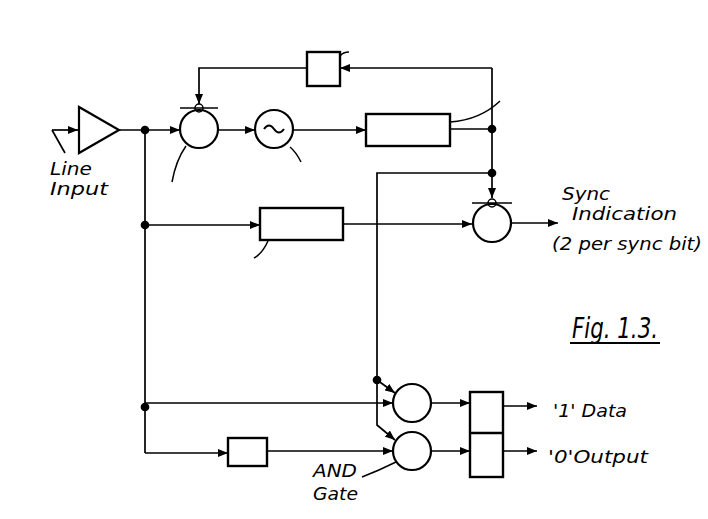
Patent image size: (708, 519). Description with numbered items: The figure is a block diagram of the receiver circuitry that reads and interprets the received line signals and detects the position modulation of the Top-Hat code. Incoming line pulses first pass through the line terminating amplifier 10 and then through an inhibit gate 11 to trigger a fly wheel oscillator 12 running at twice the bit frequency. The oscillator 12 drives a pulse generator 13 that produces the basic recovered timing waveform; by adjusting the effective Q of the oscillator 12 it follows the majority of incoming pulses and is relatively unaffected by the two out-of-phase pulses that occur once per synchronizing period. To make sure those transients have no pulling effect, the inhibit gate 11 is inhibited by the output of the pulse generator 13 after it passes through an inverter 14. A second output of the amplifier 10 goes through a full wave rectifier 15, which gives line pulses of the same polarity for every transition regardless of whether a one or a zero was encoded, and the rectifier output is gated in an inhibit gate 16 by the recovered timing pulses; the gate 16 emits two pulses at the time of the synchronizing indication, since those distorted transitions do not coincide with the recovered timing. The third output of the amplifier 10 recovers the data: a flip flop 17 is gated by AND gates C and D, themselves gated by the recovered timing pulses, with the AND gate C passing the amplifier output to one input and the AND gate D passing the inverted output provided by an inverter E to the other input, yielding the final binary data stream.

The line terminating amplifier 10 is at (105, 121).
The inhibit gate 11 is at (203, 148).
The fly wheel oscillator 12 is at (280, 148).
The pulse generator 13 is at (411, 114).
The inverter 14 is at (327, 52).
The full wave rectifier 15 is at (305, 240).
The inhibit gate 16 is at (484, 239).
The flip flop 17 is at (494, 392).
The AND gate C is at (413, 384).
The AND gate D is at (412, 470).
The inverter E is at (252, 466).